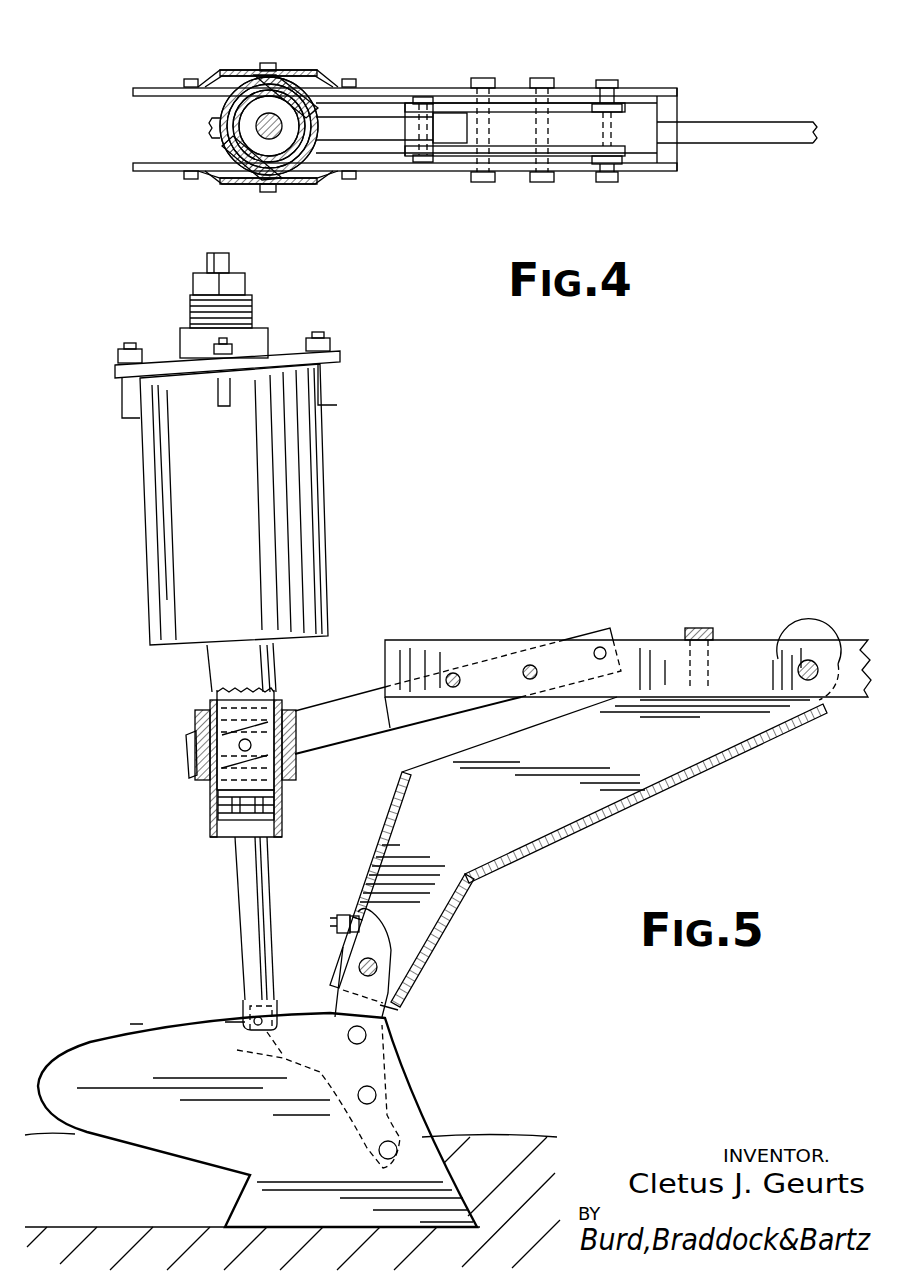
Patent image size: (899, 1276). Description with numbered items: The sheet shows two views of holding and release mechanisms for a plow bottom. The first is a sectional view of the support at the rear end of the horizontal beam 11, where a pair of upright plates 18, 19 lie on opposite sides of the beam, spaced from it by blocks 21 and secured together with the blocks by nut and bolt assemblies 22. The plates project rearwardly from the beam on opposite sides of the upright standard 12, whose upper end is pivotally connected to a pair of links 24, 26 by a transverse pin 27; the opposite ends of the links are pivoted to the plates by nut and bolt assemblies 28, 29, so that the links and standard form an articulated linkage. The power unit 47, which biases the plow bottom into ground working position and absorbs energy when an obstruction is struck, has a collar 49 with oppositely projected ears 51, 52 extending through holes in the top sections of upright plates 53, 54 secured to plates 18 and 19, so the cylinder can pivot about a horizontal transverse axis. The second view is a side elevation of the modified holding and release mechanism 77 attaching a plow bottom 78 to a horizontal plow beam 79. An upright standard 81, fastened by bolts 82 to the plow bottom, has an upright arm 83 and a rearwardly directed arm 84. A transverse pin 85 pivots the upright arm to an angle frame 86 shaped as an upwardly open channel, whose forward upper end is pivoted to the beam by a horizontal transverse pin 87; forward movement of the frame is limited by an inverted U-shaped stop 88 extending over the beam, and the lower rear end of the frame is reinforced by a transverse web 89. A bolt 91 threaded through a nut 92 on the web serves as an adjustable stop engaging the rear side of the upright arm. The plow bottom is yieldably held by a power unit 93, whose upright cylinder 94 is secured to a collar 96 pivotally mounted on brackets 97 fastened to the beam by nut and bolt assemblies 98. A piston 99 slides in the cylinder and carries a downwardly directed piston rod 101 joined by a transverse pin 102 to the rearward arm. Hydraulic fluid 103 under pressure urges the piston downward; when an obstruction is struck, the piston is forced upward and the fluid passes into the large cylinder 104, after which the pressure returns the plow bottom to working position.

In FIG. 4, the horizontal beam 11 is at (747, 130).
In FIG. 4, the upright standard 12 is at (373, 133).
In FIG. 4, the upright plate 18 is at (386, 88).
In FIG. 4, the upright plate 19 is at (407, 172).
In FIG. 4, the blocks 21 is at (657, 157).
In FIG. 4, the nut and bolt assemblies 22 is at (540, 78).
In FIG. 4, the link 24 is at (570, 156).
In FIG. 4, the link 26 is at (568, 105).
In FIG. 4, the transverse pin 27 is at (423, 99).
In FIG. 4, the nut and bolt assembly 28 is at (608, 79).
In FIG. 4, the nut and bolt assembly 29 is at (616, 182).
In FIG. 4, the power unit 47 is at (216, 106).
In FIG. 4, the collar 49 is at (290, 94).
In FIG. 4, the ear 51 is at (268, 64).
In FIG. 4, the ear 52 is at (266, 192).
In FIG. 4, the upright plate 53 is at (235, 70).
In FIG. 4, the upright plate 54 is at (222, 185).
In FIG. 5, the holding and release mechanism 77 is at (176, 756).
In FIG. 5, the plow bottom 78 is at (112, 1057).
In FIG. 5, the horizontal plow beam 79 is at (647, 650).
In FIG. 5, the upright standard 81 is at (387, 1015).
In FIG. 5, the bolts 82 is at (390, 1141).
In FIG. 5, the upright arm 83 is at (373, 933).
In FIG. 5, the rearwardly directed arm 84 is at (275, 1056).
In FIG. 5, the transverse pin 85 is at (378, 967).
In FIG. 5, the angle frame 86 is at (590, 822).
In FIG. 5, the horizontal transverse pin 87 is at (812, 660).
In FIG. 5, the inverted U-shaped stop 88 is at (707, 626).
In FIG. 5, the transverse web 89 is at (388, 814).
In FIG. 5, the bolt 91 is at (330, 920).
In FIG. 5, the nut 92 is at (348, 912).
In FIG. 5, the power unit 93 is at (147, 610).
In FIG. 5, the upright cylinder 94 is at (212, 674).
In FIG. 5, the collar 96 is at (295, 712).
In FIG. 5, the brackets 97 is at (350, 702).
In FIG. 5, the nut and bolt assemblies 98 is at (456, 677).
In FIG. 5, the piston 99 is at (222, 808).
In FIG. 5, the piston rod 101 is at (240, 864).
In FIG. 5, the transverse pin 102 is at (250, 1023).
In FIG. 5, the hydraulic fluid 103 is at (258, 780).
In FIG. 5, the large cylinder 104 is at (308, 512).